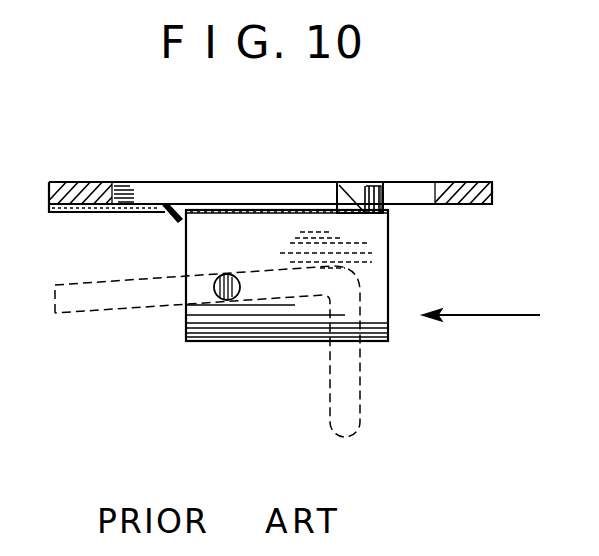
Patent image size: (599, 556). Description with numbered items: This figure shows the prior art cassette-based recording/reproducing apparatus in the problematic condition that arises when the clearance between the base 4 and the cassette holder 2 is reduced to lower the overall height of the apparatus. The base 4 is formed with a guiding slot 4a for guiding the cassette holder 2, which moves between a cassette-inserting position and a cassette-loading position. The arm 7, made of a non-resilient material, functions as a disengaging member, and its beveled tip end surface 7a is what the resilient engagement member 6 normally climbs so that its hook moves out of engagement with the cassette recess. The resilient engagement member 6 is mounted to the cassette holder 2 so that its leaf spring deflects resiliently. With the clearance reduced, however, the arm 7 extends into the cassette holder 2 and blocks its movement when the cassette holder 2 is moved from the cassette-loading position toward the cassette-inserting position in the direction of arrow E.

The base 4 is at (84, 182).
The guiding slot 4a is at (120, 302).
The arm 7 is at (136, 198).
The beveled surface 7a is at (173, 223).
The resilient engagement member 6 is at (353, 188).
The cassette holder 2 is at (243, 341).
The direction of arrow E is at (481, 301).